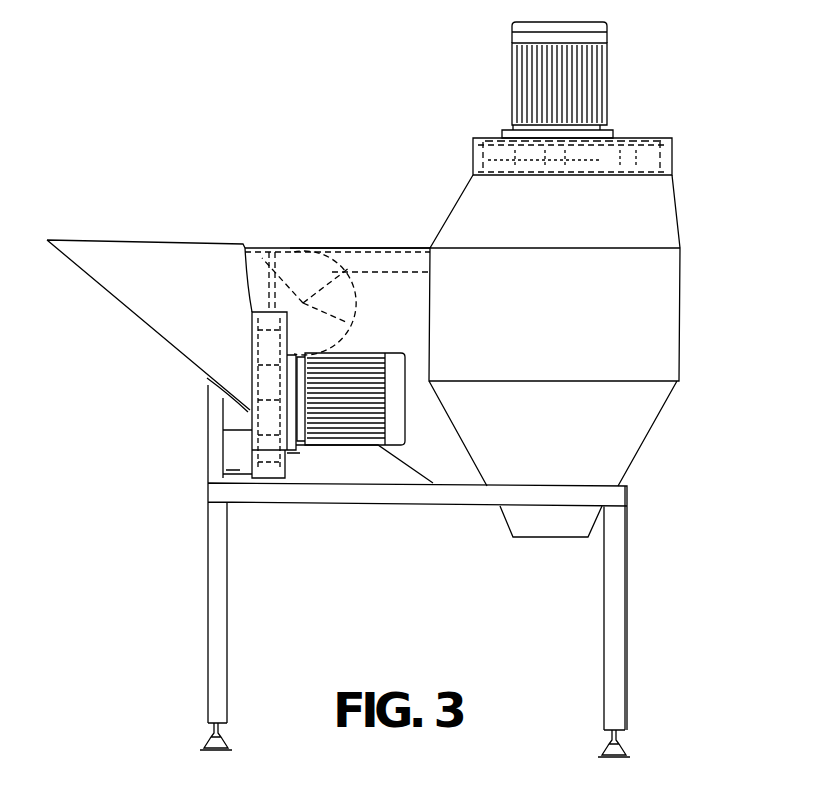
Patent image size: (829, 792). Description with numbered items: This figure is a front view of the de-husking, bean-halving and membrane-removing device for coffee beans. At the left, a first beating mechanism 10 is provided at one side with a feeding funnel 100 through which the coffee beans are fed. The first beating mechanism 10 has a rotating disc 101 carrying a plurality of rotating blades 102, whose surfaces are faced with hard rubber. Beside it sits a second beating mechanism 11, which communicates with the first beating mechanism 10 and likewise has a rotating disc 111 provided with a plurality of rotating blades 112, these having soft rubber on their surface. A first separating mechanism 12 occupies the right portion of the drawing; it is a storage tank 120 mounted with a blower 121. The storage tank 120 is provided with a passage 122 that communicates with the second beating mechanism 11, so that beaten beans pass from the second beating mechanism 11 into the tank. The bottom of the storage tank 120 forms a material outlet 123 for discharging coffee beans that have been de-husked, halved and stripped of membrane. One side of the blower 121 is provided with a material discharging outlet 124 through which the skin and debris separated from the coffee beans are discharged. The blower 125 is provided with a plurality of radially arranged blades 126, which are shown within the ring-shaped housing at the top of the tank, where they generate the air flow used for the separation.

The first beating mechanism 10 is at (190, 403).
The feeding funnel 100 is at (118, 247).
The second beating mechanism 11 is at (267, 190).
The rotating disc 111 is at (298, 262).
The rotating blades 112 is at (268, 268).
The rotating disc 101 is at (288, 450).
The rotating blades 102 is at (270, 440).
The passage 122 is at (382, 245).
The first separating mechanism 12 is at (611, 313).
The storage tank 120 is at (658, 332).
The blower 121 is at (472, 123).
The material outlet 123 is at (537, 540).
The material discharging outlet 124 is at (670, 150).
The blower 125 is at (623, 143).
The radially arranged blades 126 is at (610, 163).